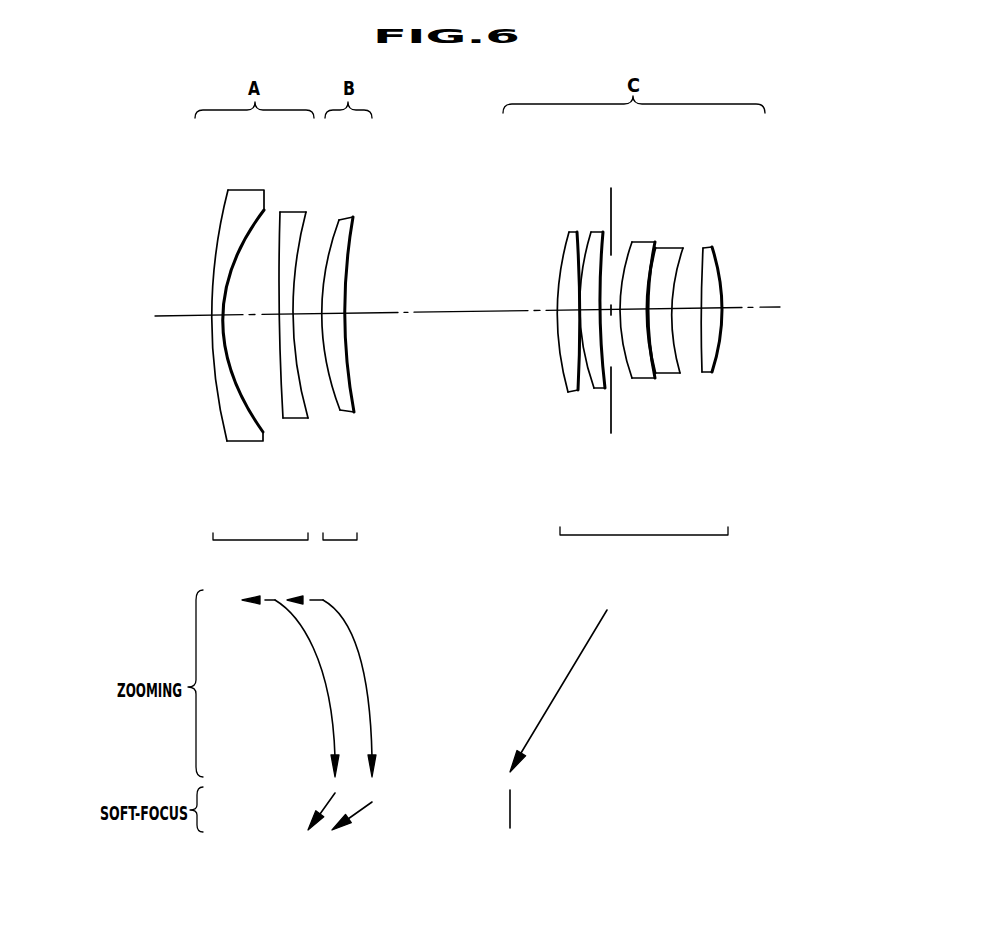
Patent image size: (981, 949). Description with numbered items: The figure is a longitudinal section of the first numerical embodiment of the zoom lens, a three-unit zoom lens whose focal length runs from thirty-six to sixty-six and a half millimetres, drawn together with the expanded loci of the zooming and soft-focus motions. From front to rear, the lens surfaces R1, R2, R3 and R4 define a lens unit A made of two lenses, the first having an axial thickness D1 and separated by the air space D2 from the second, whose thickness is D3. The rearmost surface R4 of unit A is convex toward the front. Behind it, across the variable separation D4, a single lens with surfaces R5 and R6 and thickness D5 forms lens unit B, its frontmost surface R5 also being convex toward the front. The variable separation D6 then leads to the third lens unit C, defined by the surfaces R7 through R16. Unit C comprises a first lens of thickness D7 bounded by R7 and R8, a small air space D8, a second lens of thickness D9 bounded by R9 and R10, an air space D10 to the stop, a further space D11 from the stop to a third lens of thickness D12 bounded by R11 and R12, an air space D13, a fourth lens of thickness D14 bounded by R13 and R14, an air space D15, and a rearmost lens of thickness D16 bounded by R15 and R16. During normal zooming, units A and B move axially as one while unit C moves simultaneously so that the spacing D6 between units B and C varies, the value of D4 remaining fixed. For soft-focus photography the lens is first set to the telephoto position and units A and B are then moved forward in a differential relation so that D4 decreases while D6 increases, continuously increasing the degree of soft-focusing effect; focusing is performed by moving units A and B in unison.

The first lens surface R1 is at (215, 234).
The second lens surface R2 is at (262, 215).
The third lens surface R3 is at (280, 210).
The fourth lens surface R4 is at (303, 212).
The fifth lens surface R5 is at (338, 222).
The sixth lens surface R6 is at (346, 222).
The seventh lens surface R7 is at (563, 256).
The eighth lens surface R8 is at (578, 232).
The ninth lens surface R9 is at (584, 245).
The tenth lens surface R10 is at (603, 236).
The eleventh lens surface R11 is at (630, 247).
The twelfth lens surface R12 is at (649, 252).
The thirteenth lens surface R13 is at (658, 254).
The fourteenth lens surface R14 is at (686, 258).
The fifteenth lens surface R15 is at (706, 247).
The sixteenth lens surface R16 is at (718, 263).
The first axial thickness D1 is at (222, 322).
The second axial air separation D2 is at (266, 320).
The third axial thickness D3 is at (286, 320).
The variable separation between units A and B D4 is at (309, 320).
The fifth axial thickness D5 is at (334, 320).
The variable separation between units B and C D6 is at (447, 316).
The seventh axial thickness D7 is at (567, 314).
The eighth axial air separation D8 is at (580, 314).
The ninth axial thickness D9 is at (590, 314).
The tenth axial air separation D10 is at (605, 314).
The eleventh axial air separation D11 is at (627, 314).
The twelfth axial thickness D12 is at (636, 314).
The thirteenth axial air separation D13 is at (662, 314).
The fourteenth axial thickness D14 is at (670, 313).
The fifteenth axial air separation D15 is at (693, 313).
The sixteenth axial thickness D16 is at (717, 313).